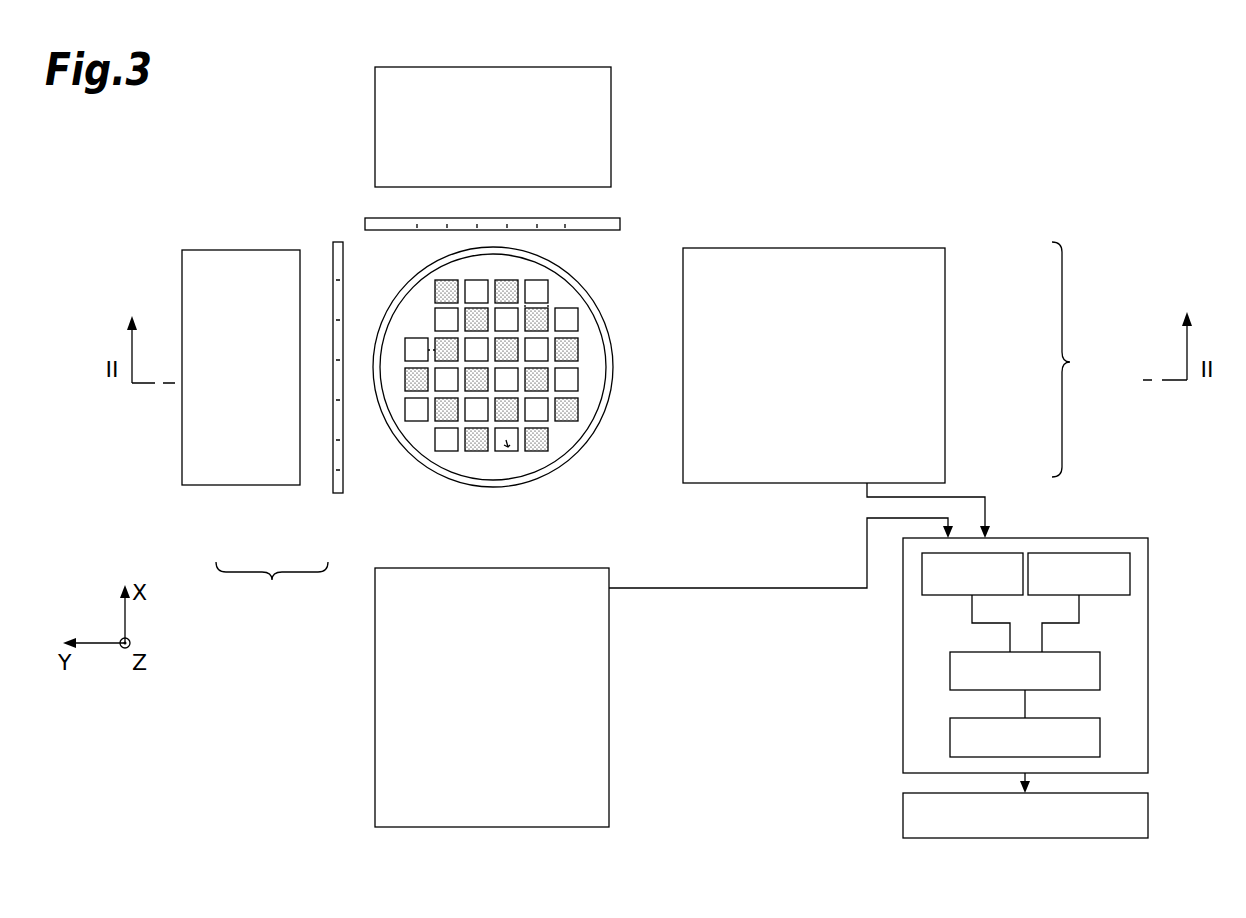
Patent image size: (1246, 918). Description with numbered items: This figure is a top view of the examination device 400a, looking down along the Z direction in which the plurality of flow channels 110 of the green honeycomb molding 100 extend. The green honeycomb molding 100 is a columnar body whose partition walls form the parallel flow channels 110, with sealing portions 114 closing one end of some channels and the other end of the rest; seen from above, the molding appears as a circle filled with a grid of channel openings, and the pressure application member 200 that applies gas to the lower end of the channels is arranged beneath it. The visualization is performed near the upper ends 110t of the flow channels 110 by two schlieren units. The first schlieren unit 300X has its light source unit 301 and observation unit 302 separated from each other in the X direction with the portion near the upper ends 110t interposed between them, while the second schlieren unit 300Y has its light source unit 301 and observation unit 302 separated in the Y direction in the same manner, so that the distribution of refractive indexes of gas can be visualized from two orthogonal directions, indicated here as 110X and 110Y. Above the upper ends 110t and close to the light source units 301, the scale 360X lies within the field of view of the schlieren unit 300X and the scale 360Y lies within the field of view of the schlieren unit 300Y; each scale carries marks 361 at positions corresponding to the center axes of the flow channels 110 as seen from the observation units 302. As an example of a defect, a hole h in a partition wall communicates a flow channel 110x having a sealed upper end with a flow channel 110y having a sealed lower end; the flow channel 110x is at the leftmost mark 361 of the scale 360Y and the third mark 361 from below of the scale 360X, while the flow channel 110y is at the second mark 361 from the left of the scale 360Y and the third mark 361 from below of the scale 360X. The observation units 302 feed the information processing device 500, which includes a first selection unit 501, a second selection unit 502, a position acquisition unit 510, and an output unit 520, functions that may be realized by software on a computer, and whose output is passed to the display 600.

The examination device 400a is at (1067, 142).
The green honeycomb molding 100 is at (607, 372).
The pressure application member 200 is at (605, 400).
The flow channels 110 is at (575, 318).
The die in X direction 110X is at (540, 321).
The die in Y direction 110Y is at (536, 292).
The flow channel with sealed upper end 110x is at (407, 397).
The flow channel with sealed lower end 110y is at (432, 395).
The upper ends of the flow channels 110t is at (507, 442).
The sealing portions 114 is at (507, 287).
The hole h is at (547, 305).
The first schlieren unit 300X is at (272, 587).
The second schlieren unit 300Y is at (1092, 359).
The light source unit 301 is at (611, 116).
The observation unit 302 is at (609, 700).
The scale 360X is at (340, 240).
The scale 360Y is at (387, 218).
The marks 361 is at (567, 226).
The information processing device 500 is at (1148, 627).
The first selection unit 501 is at (1130, 575).
The second selection unit 502 is at (920, 575).
The position acquisition unit 510 is at (1100, 668).
The output unit 520 is at (1100, 738).
The display 600 is at (1148, 815).